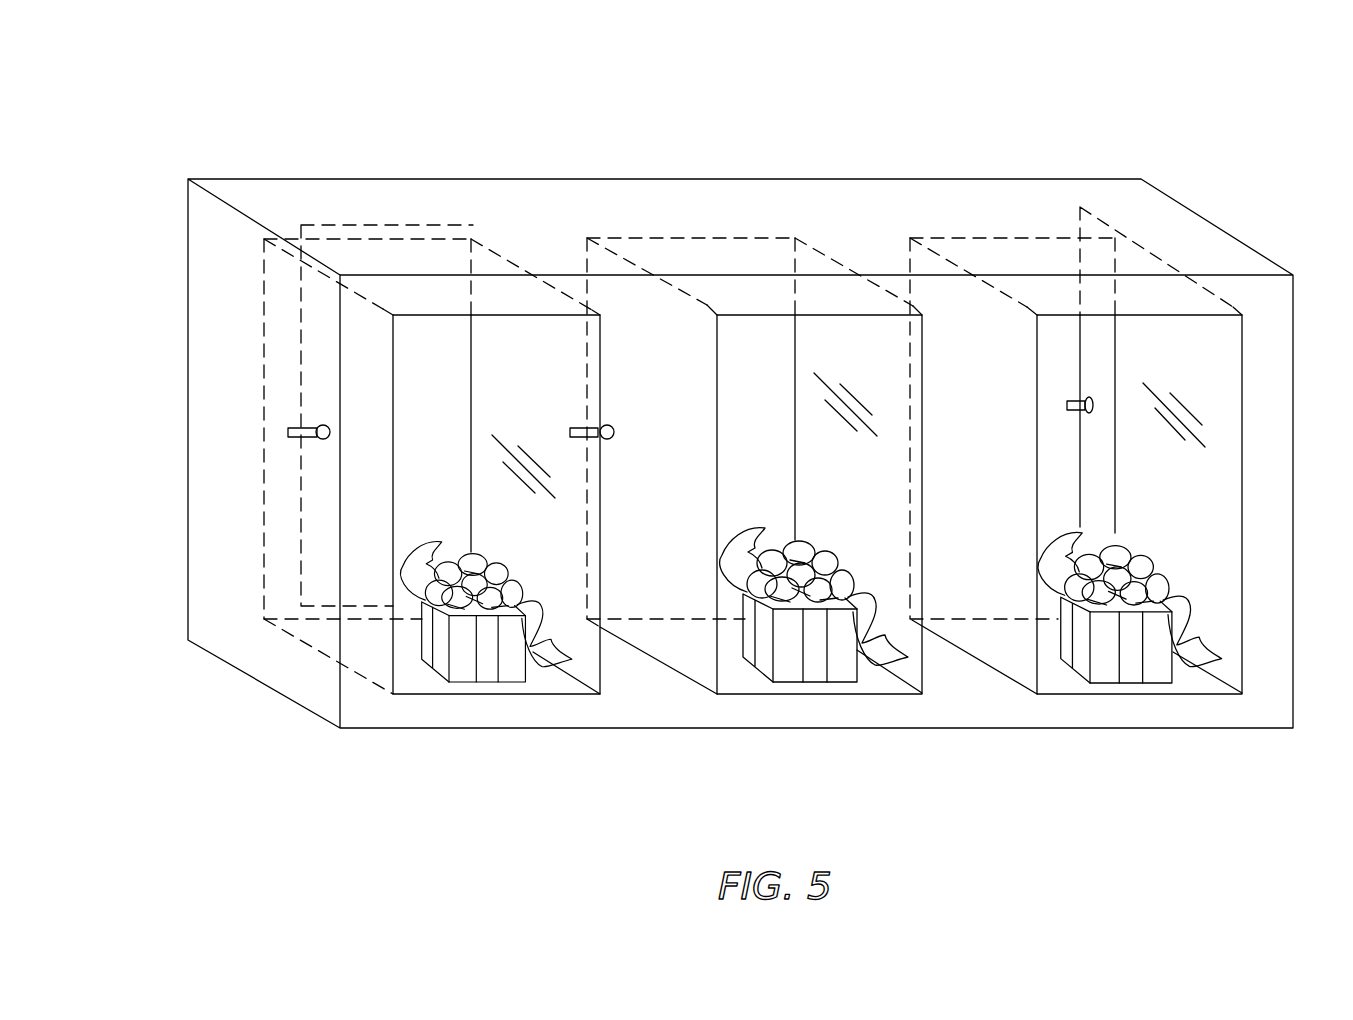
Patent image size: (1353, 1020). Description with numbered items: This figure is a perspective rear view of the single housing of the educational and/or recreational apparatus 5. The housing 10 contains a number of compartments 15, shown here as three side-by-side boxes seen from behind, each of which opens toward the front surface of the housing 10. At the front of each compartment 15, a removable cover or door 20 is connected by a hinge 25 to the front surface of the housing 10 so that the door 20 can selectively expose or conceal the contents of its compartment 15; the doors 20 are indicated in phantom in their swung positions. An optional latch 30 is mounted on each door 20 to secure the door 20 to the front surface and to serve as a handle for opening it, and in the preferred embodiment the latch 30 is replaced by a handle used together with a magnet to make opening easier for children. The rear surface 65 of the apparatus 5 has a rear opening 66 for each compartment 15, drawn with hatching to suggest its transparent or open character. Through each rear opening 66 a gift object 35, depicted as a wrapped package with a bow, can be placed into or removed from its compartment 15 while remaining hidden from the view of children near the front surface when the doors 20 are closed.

The educational and/or recreational apparatus 5 is at (737, 92).
The housing 10 is at (802, 177).
The compartment 15 is at (417, 256).
The door 20 is at (306, 222).
The hinge 25 is at (472, 238).
The latch 30 is at (288, 433).
The gift object 35 is at (460, 683).
The rear surface 65 is at (410, 695).
The rear opening 66 is at (407, 493).